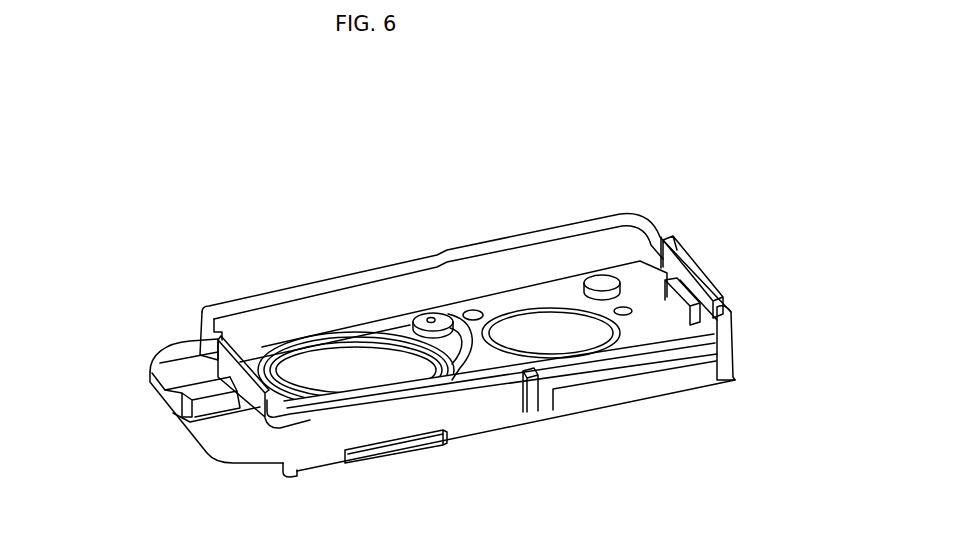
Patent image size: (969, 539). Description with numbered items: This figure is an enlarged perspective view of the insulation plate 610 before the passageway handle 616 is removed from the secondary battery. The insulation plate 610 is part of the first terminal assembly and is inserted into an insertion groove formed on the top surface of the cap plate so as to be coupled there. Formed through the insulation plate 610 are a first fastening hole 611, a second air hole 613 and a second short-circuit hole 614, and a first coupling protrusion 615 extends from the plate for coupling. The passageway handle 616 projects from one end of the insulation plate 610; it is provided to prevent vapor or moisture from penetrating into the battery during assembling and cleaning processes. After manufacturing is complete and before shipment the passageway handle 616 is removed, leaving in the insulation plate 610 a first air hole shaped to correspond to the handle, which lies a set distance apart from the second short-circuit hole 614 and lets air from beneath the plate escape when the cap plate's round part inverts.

The insulation plate 610 is at (689, 172).
The first fastening hole 611 is at (530, 318).
The second air hole 613 is at (433, 316).
The second short-circuit hole 614 is at (352, 352).
The first coupling protrusion 615 is at (692, 392).
The passageway handle 616 is at (207, 407).